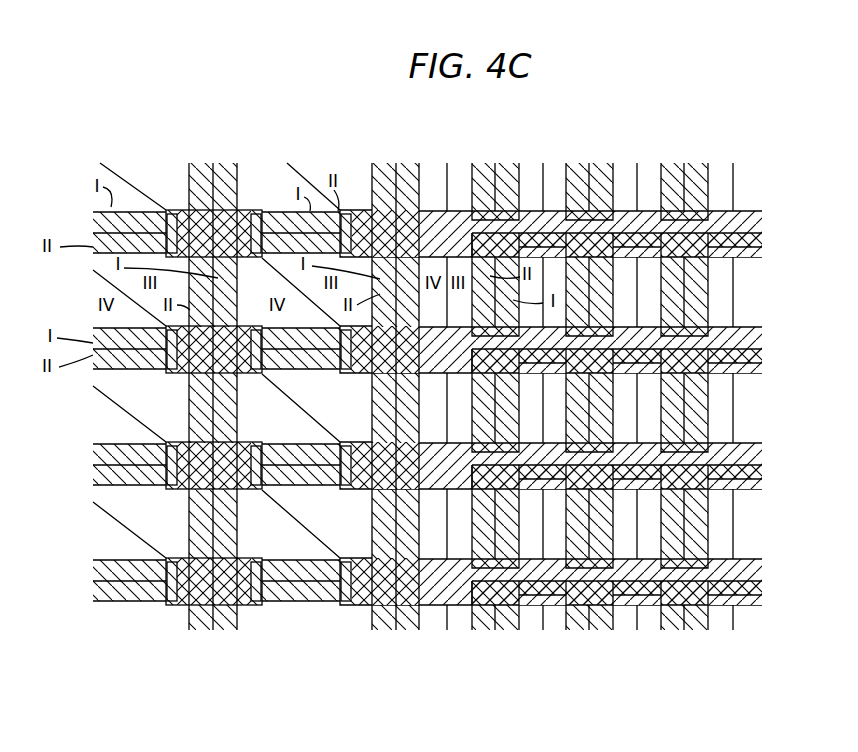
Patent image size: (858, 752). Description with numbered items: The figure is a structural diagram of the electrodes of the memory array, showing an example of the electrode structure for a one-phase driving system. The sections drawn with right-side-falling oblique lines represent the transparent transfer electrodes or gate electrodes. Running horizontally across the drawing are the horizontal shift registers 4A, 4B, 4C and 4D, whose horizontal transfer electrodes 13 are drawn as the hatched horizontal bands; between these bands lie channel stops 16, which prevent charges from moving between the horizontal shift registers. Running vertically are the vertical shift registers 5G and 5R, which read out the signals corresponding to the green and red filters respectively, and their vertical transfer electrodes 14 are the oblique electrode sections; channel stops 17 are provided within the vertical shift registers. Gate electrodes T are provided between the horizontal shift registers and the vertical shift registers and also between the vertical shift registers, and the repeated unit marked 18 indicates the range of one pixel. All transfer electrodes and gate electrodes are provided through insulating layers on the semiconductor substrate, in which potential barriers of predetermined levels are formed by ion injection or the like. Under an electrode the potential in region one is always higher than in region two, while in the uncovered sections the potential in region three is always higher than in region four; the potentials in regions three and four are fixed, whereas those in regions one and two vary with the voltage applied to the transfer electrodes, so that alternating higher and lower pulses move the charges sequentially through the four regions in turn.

The horizontal transfer electrodes 13 is at (765, 240).
The vertical transfer electrodes 14 is at (283, 211).
The channel stops 16 is at (360, 209).
The channel stops 17 is at (250, 209).
The range of one pixel 18 is at (425, 645).
The gate electrodes T is at (220, 165).
The vertical shift register 5G is at (93, 645).
The vertical shift register 5R is at (365, 645).
The horizontal shift register 4A is at (775, 450).
The horizontal shift register 4B is at (775, 330).
The horizontal shift register 4C is at (775, 215).
The horizontal shift register 4D is at (775, 163).